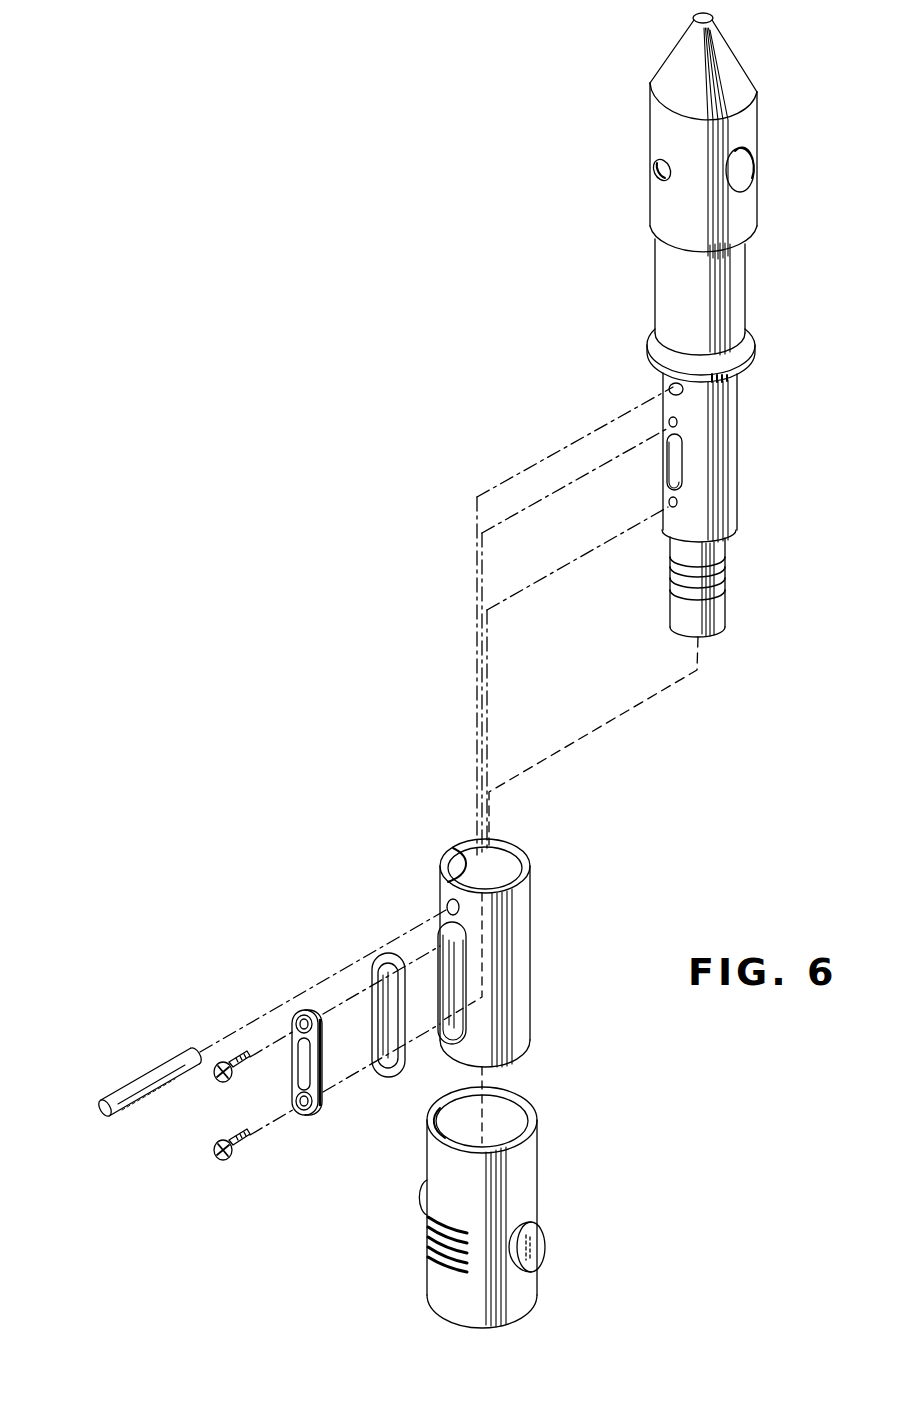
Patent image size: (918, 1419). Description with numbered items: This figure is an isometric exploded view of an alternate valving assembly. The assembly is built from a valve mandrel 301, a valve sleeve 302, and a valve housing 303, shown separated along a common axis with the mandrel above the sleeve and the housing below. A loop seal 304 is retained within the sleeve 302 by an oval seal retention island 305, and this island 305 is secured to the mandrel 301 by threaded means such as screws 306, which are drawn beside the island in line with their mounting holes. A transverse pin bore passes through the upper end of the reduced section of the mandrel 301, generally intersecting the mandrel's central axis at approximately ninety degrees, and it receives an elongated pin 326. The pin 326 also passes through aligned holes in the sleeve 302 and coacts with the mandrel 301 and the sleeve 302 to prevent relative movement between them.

The valve mandrel 301 is at (660, 188).
The valve sleeve 302 is at (513, 913).
The valve housing 303 is at (528, 1150).
The loop seal 304 is at (395, 1073).
The oval seal retention island 305 is at (312, 1118).
The screws 306 is at (213, 1075).
The elongated pin 326 is at (103, 1104).